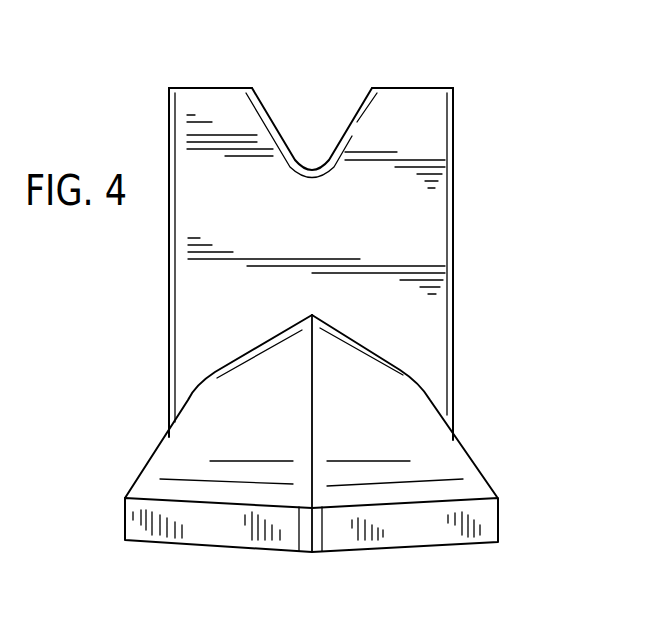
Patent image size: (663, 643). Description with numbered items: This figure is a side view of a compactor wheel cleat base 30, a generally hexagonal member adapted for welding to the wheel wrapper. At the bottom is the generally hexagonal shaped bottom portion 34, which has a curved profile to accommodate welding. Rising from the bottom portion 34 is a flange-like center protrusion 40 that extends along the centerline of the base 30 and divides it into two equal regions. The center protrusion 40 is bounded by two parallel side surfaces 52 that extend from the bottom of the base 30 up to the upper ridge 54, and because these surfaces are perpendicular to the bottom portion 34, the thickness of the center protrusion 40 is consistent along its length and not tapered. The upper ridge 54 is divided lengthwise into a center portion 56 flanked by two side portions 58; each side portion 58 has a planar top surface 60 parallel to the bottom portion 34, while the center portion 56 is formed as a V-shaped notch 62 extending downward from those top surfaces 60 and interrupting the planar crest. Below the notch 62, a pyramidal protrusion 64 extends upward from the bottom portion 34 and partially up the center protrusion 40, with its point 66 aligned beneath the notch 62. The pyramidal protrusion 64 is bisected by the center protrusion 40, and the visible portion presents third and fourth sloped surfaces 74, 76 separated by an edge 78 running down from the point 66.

The base 30 is at (562, 72).
The bottom portion 34 is at (152, 543).
The center protrusion 40 is at (503, 295).
The side surfaces 52 is at (169, 262).
The upper ridge 54 is at (453, 40).
The center portion 56 is at (300, 84).
The side portions 58 is at (170, 76).
The top surface 60 is at (212, 88).
The V-shaped notch 62 is at (313, 127).
The pyramidal protrusion 64 is at (472, 435).
The point 66 is at (315, 311).
The third sloped surface 74 is at (263, 446).
The fourth sloped surface 76 is at (388, 446).
The edge 78 is at (313, 408).